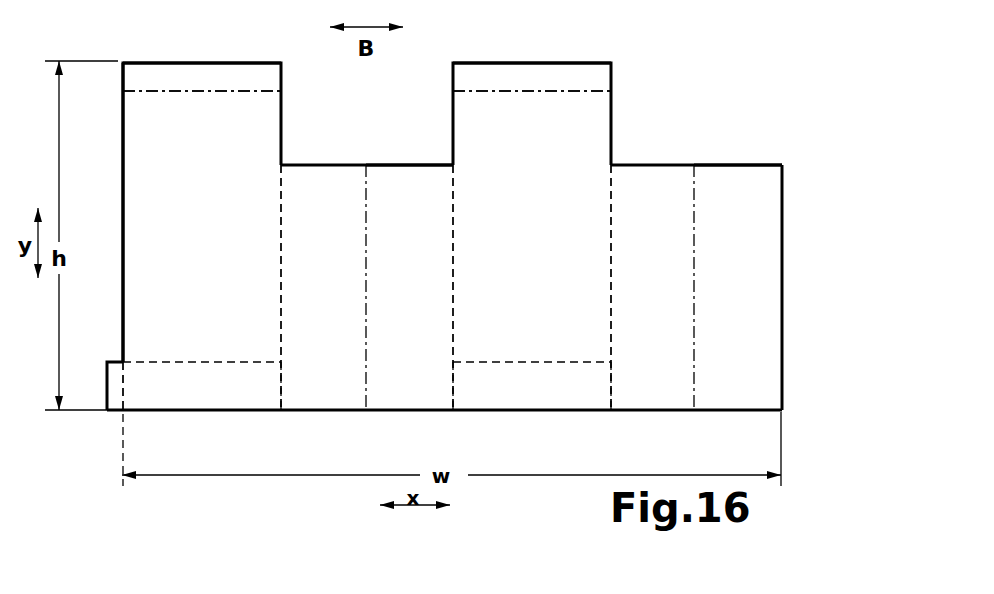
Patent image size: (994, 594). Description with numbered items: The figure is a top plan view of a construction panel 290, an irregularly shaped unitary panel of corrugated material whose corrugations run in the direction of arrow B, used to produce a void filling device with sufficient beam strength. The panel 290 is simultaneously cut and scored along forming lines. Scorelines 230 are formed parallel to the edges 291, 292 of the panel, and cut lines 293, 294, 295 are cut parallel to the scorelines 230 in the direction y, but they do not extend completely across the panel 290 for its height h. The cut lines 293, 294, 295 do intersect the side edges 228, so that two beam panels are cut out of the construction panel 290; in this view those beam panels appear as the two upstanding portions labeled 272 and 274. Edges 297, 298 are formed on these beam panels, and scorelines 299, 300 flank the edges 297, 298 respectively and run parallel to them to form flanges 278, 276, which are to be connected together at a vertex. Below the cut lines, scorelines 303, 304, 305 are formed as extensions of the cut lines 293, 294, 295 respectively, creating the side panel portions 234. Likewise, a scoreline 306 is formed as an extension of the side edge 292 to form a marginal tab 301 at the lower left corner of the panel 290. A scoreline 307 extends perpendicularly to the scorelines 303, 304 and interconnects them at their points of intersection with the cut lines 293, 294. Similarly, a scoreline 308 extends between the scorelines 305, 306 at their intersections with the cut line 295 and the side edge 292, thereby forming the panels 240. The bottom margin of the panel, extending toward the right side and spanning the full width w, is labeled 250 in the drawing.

The side edges 228 is at (305, 180).
The scorelines 230 is at (366, 305).
The side panel portions 234 is at (428, 183).
The panels 240 is at (205, 412).
The second base segment 250 is at (550, 412).
The first tooth 272 is at (179, 249).
The second tooth 274 is at (489, 199).
The flange 276 is at (200, 66).
The flange 278 is at (575, 75).
The construction panel 290 is at (678, 79).
The edge 291 is at (783, 295).
The edge 292 is at (123, 198).
The cut line 293 is at (609, 232).
The cut line 294 is at (453, 265).
The cut line 295 is at (281, 277).
The edge 297 is at (485, 63).
The edge 298 is at (158, 61).
The scoreline 299 is at (481, 91).
The scoreline 300 is at (152, 89).
The marginal tab 301 is at (112, 412).
The scoreline 303 is at (611, 382).
The scoreline 304 is at (453, 390).
The scoreline 305 is at (282, 388).
The scoreline 306 is at (123, 392).
The scoreline 307 is at (488, 362).
The scoreline 308 is at (155, 362).